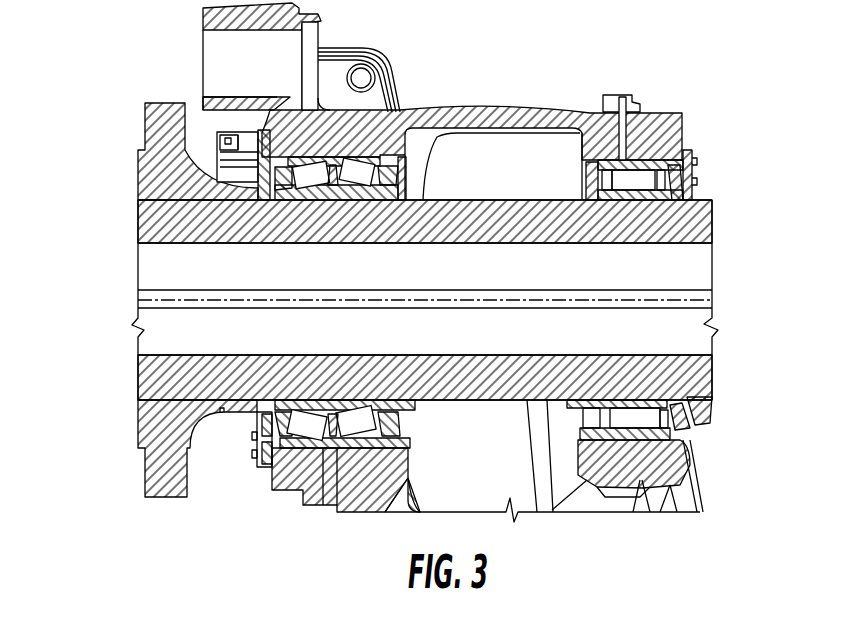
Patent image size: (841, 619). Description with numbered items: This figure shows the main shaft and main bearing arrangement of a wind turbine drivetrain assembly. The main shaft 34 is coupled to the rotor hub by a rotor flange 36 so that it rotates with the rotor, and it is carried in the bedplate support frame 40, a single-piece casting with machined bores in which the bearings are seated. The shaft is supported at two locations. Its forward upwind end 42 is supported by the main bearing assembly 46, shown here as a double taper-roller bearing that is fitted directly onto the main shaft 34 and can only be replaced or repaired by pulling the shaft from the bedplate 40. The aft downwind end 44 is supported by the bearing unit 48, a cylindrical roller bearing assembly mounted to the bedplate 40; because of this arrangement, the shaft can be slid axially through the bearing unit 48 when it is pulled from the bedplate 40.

The main shaft 34 is at (494, 203).
The rotor flange 36 is at (138, 391).
The bedplate support frame 40 is at (282, 107).
The forward upwind end 42 is at (109, 255).
The aft downwind end 44 is at (734, 272).
The main bearing assembly 46 is at (380, 126).
The bearing unit 48 is at (683, 123).